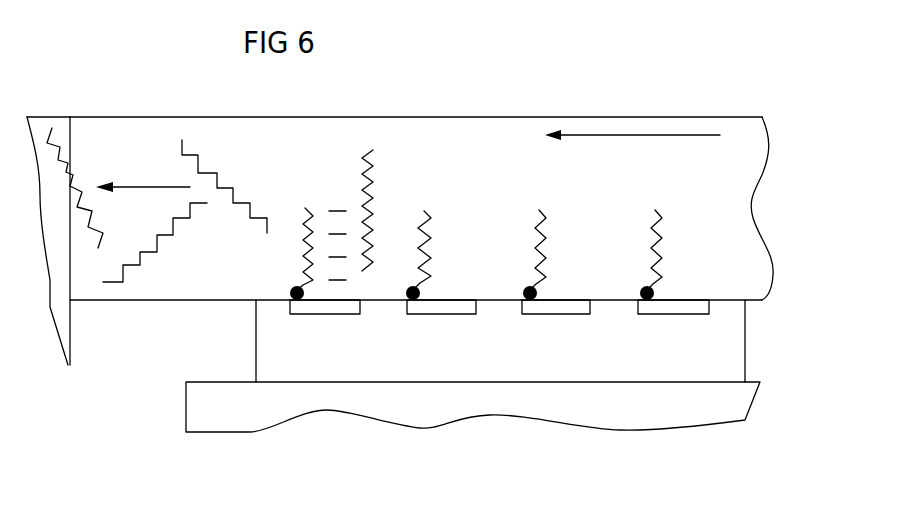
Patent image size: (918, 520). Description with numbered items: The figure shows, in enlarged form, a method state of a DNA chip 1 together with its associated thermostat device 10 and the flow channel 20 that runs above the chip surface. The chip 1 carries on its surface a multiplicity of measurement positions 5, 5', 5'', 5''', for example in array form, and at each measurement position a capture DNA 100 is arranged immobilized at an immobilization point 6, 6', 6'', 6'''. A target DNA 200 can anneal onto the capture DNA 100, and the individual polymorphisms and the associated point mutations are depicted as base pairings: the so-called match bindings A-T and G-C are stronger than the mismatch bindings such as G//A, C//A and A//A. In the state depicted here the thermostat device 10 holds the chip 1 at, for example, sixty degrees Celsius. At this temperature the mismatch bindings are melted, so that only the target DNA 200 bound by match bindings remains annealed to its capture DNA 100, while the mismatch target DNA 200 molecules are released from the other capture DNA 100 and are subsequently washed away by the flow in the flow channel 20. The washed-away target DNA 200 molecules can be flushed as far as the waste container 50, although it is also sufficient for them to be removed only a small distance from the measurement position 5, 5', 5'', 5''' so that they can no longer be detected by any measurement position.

The DNA chip 1 is at (272, 343).
The measurement position 5 is at (325, 334).
The measurement position 5' is at (441, 334).
The measurement position 5'' is at (556, 334).
The measurement position 5''' is at (673, 334).
The immobilization point 6 is at (279, 271).
The immobilization point 6' is at (400, 316).
The immobilization point 6'' is at (517, 316).
The immobilization point 6''' is at (632, 316).
The thermostat device 10 is at (637, 416).
The flow channel 20 is at (480, 140).
The waste container 50 is at (60, 127).
The capture DNA 100 is at (308, 212).
The target DNA 200 is at (182, 150).